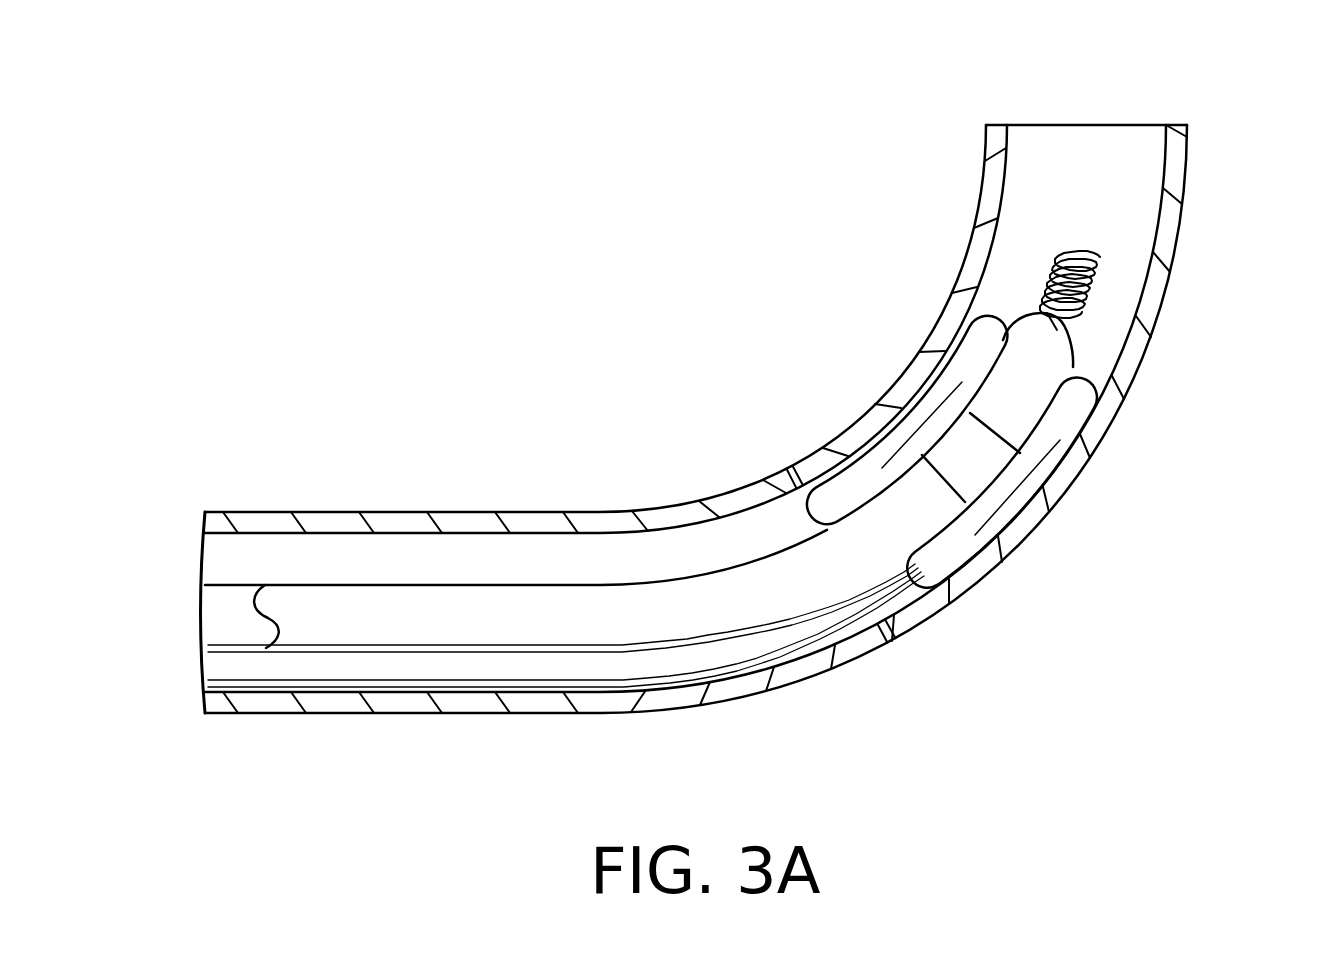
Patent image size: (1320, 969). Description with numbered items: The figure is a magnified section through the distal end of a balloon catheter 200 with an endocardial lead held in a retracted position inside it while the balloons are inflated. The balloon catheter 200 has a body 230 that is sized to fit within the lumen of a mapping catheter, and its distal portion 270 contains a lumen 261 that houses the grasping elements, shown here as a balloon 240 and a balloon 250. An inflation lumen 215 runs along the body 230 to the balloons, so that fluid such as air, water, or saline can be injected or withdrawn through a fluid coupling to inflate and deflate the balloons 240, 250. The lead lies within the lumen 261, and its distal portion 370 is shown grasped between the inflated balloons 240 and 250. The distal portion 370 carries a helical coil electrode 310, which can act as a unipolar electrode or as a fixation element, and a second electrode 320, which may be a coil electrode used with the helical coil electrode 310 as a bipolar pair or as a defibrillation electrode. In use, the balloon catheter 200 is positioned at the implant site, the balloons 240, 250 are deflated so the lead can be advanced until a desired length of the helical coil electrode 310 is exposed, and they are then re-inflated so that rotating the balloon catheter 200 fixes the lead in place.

The balloon catheter 200 is at (471, 193).
The inflation lumen 215 is at (465, 682).
The body 230 is at (400, 615).
The balloon 240 is at (1035, 445).
The balloon 250 is at (933, 397).
The lumen 261 is at (1125, 123).
The distal portion 270 is at (528, 510).
The helical coil electrode 310 is at (1090, 294).
The second electrode 320 is at (968, 460).
The distal portion 370 is at (905, 539).